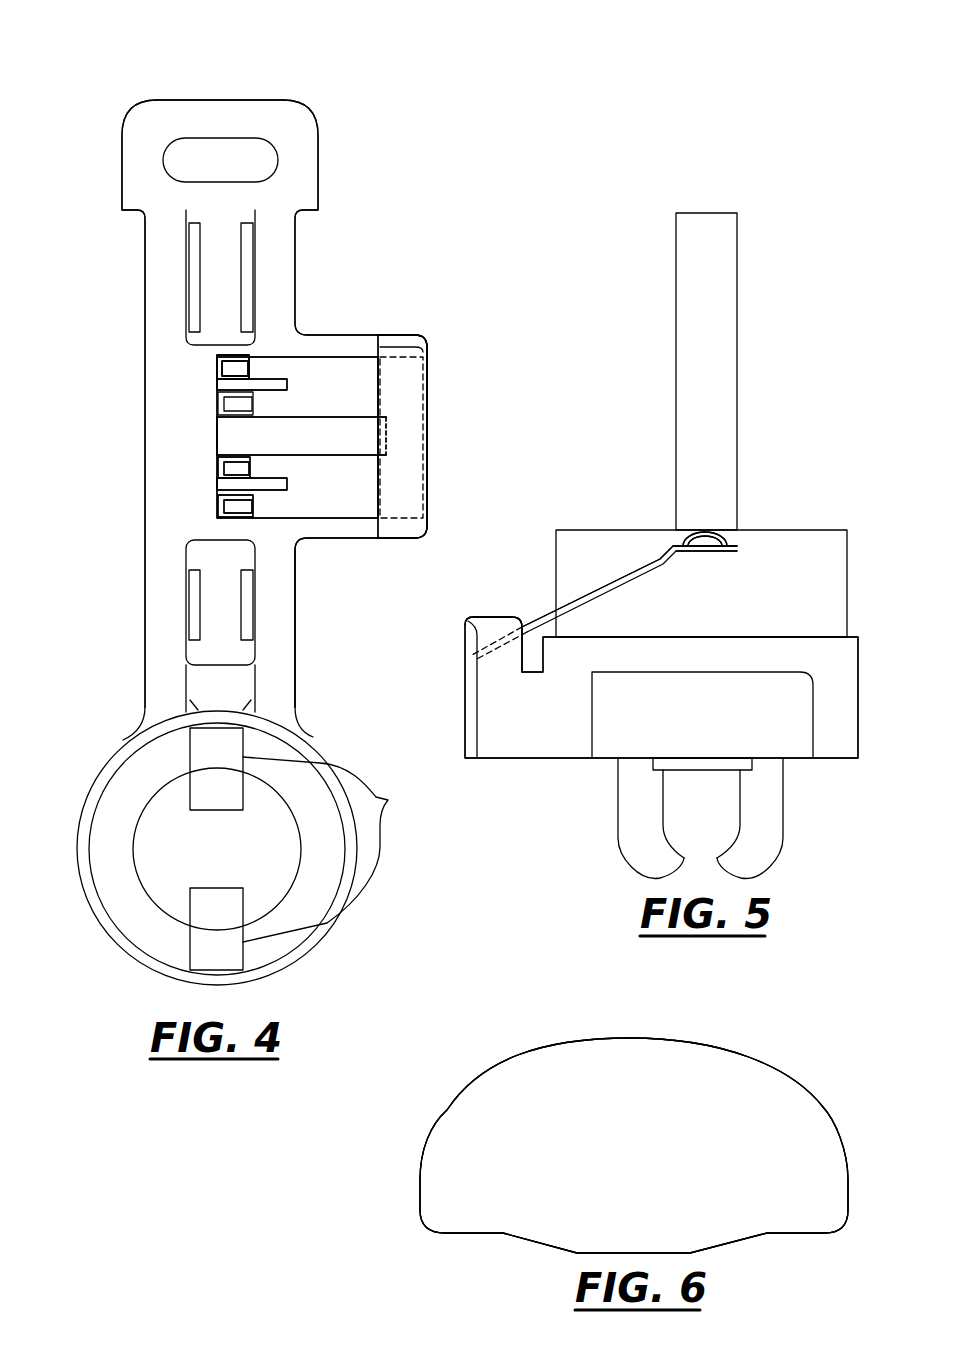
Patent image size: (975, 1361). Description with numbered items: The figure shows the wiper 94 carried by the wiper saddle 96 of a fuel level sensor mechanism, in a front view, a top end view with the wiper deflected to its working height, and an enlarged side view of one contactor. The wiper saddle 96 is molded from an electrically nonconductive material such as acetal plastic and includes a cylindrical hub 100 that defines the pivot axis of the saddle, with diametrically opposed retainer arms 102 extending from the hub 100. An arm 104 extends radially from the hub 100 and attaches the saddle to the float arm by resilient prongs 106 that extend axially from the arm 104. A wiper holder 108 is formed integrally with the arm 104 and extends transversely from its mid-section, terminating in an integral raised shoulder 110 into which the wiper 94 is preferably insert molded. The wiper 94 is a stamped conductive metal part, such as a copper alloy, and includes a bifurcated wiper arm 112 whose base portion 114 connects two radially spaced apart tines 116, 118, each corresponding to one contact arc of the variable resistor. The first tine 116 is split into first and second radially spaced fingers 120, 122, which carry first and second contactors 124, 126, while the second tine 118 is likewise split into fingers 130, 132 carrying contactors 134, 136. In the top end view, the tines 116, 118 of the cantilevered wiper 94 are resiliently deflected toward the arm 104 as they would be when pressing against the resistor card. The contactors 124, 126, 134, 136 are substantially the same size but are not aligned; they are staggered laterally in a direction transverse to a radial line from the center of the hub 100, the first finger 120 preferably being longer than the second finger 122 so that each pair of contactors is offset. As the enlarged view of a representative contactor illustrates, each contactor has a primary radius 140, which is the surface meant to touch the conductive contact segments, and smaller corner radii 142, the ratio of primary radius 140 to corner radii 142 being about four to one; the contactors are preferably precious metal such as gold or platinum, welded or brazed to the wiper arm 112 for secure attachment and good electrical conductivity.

In FIG. 4, the wiper 94 is at (350, 346).
In FIG. 5, the wiper 94 is at (605, 562).
In FIG. 4, the wiper saddle 96 is at (136, 287).
In FIG. 4, the cylindrical hub 100 is at (112, 758).
In FIG. 5, the cylindrical hub 100 is at (850, 558).
In FIG. 4, the retainer arms 102 is at (388, 800).
In FIG. 5, the retainer arms 102 is at (737, 350).
In FIG. 4, the arm 104 is at (145, 455).
In FIG. 5, the arm 104 is at (748, 672).
In FIG. 4, the resilient prongs 106 is at (204, 240).
In FIG. 5, the resilient prongs 106 is at (717, 855).
In FIG. 4, the wiper holder 108 is at (334, 528).
In FIG. 5, the wiper holder 108 is at (524, 740).
In FIG. 4, the raised shoulder 110 is at (423, 532).
In FIG. 5, the raised shoulder 110 is at (492, 622).
In FIG. 4, the bifurcated wiper arm 112 is at (426, 372).
In FIG. 5, the bifurcated wiper arm 112 is at (540, 607).
In FIG. 4, the base portion 114 is at (406, 433).
In FIG. 4, the first tine 116 is at (380, 347).
In FIG. 5, the first tine 116 is at (655, 566).
In FIG. 4, the second tine 118 is at (345, 498).
In FIG. 4, the first finger 120 is at (217, 357).
In FIG. 5, the first finger 120 is at (737, 549).
In FIG. 4, the second finger 122 is at (217, 371).
In FIG. 5, the second finger 122 is at (712, 538).
In FIG. 6, the second finger 122 is at (665, 1158).
In FIG. 4, the first contactor 124 is at (240, 368).
In FIG. 5, the first contactor 124 is at (683, 542).
In FIG. 4, the second contactor 126 is at (244, 404).
In FIG. 4, the first finger of second tine 130 is at (217, 468).
In FIG. 4, the second finger of second tine 132 is at (217, 505).
In FIG. 4, the first contactor of second tine 134 is at (234, 468).
In FIG. 4, the second contactor of second tine 136 is at (242, 505).
In FIG. 6, the primary radius 140 is at (636, 1030).
In FIG. 6, the corner radii 142 is at (435, 1104).